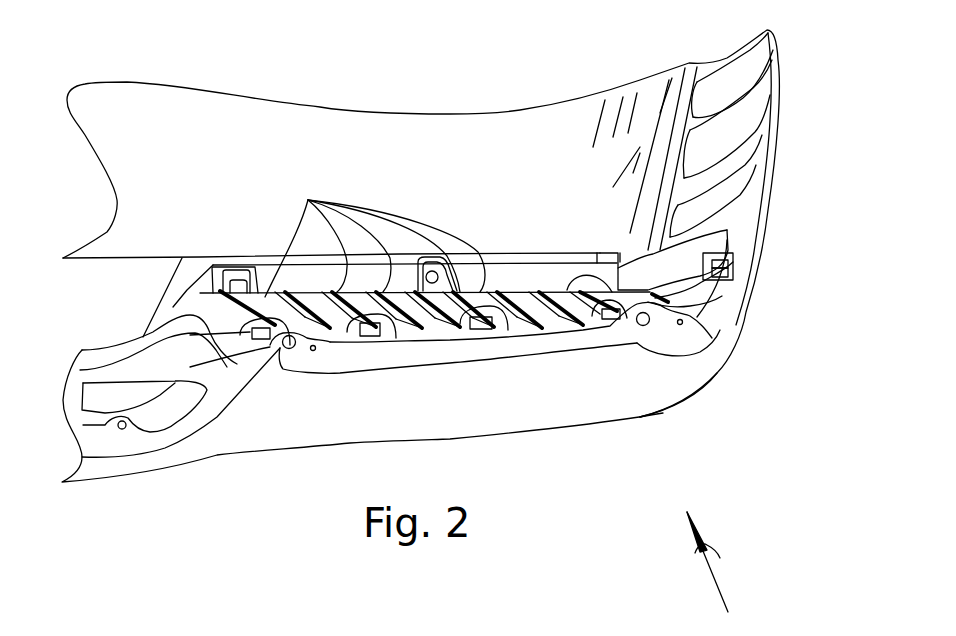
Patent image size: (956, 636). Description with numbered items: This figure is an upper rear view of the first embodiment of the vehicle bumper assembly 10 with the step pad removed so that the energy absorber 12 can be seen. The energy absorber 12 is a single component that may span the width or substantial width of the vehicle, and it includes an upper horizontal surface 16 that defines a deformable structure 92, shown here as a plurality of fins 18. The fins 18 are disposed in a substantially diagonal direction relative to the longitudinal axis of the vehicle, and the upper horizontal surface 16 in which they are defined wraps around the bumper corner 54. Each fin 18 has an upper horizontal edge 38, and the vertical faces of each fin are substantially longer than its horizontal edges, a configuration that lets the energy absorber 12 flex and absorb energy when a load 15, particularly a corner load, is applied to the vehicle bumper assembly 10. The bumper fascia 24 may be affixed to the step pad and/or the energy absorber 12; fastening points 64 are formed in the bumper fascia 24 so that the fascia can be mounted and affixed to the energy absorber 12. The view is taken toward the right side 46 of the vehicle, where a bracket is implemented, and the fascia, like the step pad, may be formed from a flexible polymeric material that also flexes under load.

The vehicle bumper assembly 10 is at (727, 488).
The energy absorber 12 is at (558, 295).
The load 15 is at (712, 582).
The upper horizontal surface 16 is at (187, 318).
The fins 18 is at (243, 311).
The bumper fascia 24 is at (622, 397).
The upper horizontal edge 38 is at (375, 237).
The right side 46 is at (621, 453).
The bumper corner 54 is at (690, 323).
The fastening points 64 is at (313, 376).
The deformable structure 92 is at (237, 364).